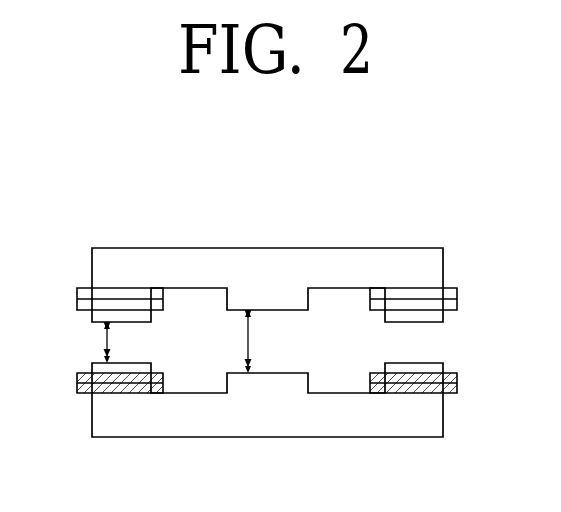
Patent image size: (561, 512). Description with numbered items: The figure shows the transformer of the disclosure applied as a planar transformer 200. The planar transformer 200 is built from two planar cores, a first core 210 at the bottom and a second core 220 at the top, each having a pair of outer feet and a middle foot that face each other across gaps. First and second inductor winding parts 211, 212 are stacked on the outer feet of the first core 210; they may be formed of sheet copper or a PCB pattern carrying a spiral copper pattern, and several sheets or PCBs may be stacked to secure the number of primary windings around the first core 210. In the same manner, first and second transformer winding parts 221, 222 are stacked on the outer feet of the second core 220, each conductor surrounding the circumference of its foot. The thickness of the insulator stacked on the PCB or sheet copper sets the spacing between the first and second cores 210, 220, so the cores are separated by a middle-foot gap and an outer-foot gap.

The planar transformer 200 is at (298, 162).
The second core 220 is at (271, 252).
The first core 210 is at (268, 421).
The first transformer winding part 221 is at (75, 287).
The second transformer winding part 222 is at (459, 287).
The first inductor winding part 211 is at (75, 372).
The second inductor winding part 212 is at (459, 372).